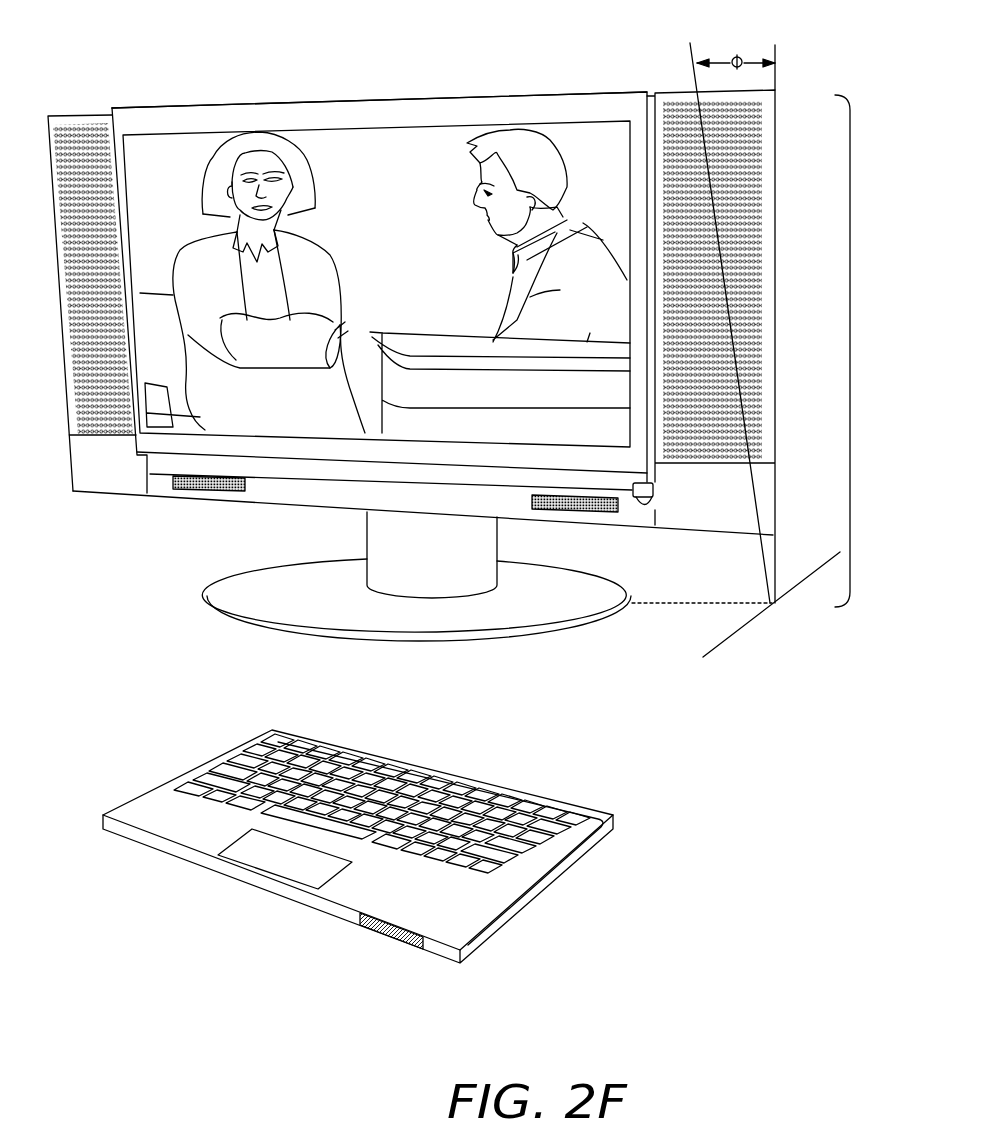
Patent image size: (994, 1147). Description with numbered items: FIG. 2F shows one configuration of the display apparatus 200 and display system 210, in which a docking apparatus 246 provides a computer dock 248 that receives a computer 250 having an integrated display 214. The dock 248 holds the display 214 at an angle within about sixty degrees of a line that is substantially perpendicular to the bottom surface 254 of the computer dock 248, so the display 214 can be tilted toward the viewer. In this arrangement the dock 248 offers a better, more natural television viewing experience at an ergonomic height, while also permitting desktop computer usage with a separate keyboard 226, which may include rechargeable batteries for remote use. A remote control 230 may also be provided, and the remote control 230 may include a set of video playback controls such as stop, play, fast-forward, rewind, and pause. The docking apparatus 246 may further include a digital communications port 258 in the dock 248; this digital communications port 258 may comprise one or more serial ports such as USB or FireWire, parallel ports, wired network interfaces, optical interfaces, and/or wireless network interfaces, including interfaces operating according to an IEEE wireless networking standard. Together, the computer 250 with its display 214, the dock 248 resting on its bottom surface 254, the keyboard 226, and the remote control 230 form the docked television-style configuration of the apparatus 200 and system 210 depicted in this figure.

The display apparatus 200 is at (243, 93).
The display system 210 is at (518, 45).
The display 214 is at (398, 150).
The computer 250 is at (580, 87).
The docking apparatus 246 is at (772, 338).
The digital communications port 258 is at (208, 491).
The computer dock 248 is at (568, 525).
The bottom surface 254 is at (533, 637).
The keyboard 226 is at (262, 747).
The remote control 230 is at (387, 933).